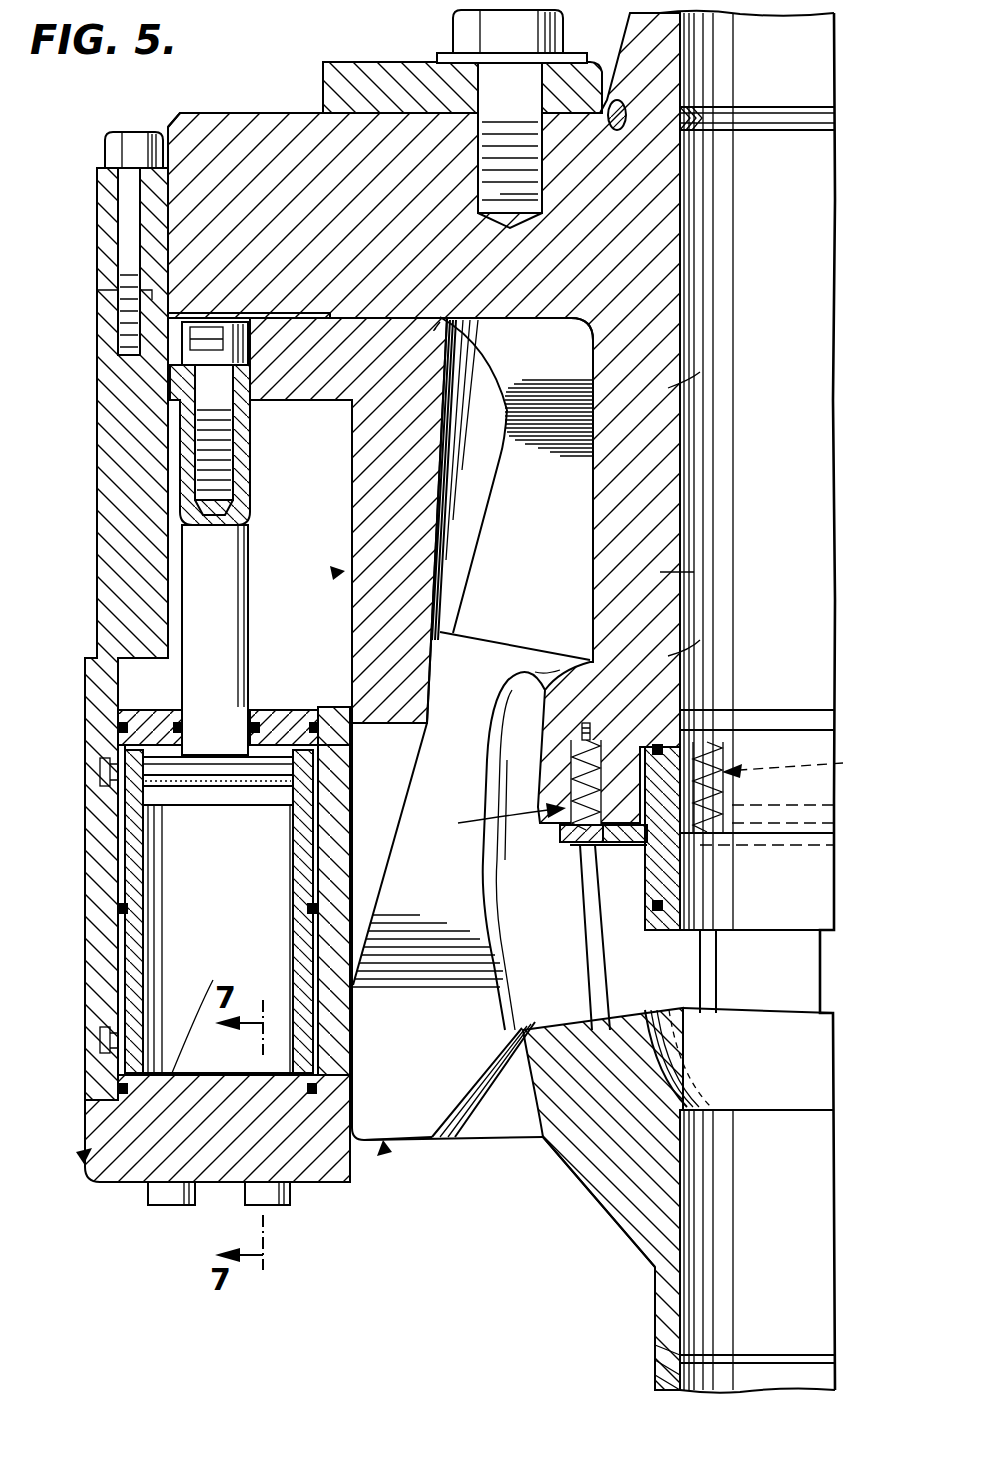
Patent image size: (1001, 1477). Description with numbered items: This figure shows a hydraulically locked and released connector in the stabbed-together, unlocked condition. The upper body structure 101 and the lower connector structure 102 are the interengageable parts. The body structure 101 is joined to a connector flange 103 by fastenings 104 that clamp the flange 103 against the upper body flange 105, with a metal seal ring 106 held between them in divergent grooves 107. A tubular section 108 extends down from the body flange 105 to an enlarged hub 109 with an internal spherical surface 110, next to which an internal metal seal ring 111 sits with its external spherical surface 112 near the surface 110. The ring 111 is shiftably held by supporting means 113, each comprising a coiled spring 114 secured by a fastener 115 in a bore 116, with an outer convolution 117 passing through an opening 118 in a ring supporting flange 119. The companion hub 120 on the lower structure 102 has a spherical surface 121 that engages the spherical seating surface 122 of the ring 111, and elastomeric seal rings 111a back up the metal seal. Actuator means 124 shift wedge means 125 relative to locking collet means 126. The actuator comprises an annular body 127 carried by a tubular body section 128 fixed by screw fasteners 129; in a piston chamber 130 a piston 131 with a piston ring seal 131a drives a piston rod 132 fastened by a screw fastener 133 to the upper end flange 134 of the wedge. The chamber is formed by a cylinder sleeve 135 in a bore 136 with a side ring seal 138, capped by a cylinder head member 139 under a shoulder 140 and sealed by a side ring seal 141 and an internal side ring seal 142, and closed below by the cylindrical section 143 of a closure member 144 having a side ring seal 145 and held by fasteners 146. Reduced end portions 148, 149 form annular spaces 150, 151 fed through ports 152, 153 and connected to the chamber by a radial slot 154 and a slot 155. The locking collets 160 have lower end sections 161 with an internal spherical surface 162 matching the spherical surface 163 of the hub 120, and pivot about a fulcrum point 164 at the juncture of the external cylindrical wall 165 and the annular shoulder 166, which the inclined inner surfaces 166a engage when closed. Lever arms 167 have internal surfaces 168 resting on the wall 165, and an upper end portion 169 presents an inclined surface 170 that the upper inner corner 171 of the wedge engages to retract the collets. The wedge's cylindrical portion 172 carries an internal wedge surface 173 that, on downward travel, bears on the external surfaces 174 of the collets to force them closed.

The upper body structure 101 is at (424, 418).
The lower connector structure 102 is at (659, 1281).
The connector flange 103 is at (386, 70).
The fastenings 104 is at (481, 156).
The upper body flange 105 is at (247, 112).
The metal seal ring 106 is at (682, 100).
The divergent grooves 107 is at (612, 100).
The tubular section 108 is at (668, 476).
The hub 109 is at (700, 692).
The spherical surface 110 is at (714, 716).
The internal metal seal ring 111 is at (706, 801).
The elastomeric seal rings 111a is at (664, 750).
The external spherical surface 112 is at (656, 762).
The supporting means 113 is at (651, 793).
The coiled spring 114 is at (578, 828).
The fastener 115 is at (583, 734).
The bore 116 is at (573, 770).
The outer convolution 117 is at (564, 845).
The opening 118 is at (606, 846).
The ring supporting flange 119 is at (576, 832).
The companion hub 120 is at (612, 1130).
The spherical surface 121 is at (681, 1070).
The spherical seating surface 122 is at (701, 966).
The actuator means 124 is at (82, 1156).
The wedge means 125 is at (335, 573).
The locking collet means 126 is at (384, 1150).
The annular body 127 is at (98, 881).
The tubular body section 128 is at (126, 433).
The screw fasteners 129 is at (126, 216).
The piston chamber 130 is at (218, 939).
The piston 131 is at (190, 800).
The piston ring seal 131a is at (233, 779).
The piston rod 132 is at (235, 546).
The screw fastener 133 is at (233, 429).
The upper end flange 134 is at (259, 346).
The cylinder sleeve 135 is at (126, 856).
The bore 136 is at (124, 801).
The side ring seal 138 is at (118, 910).
The cylinder head member 139 is at (136, 710).
The shoulder 140 is at (258, 735).
The side ring seal 141 is at (120, 728).
The internal side ring seal 142 is at (246, 735).
The cylindrical section 143 is at (243, 1086).
The closure member 144 is at (340, 1180).
The side ring seal 145 is at (118, 1089).
The fasteners 146 is at (166, 1206).
The reduced end portion 148 is at (330, 752).
The reduced end portion 149 is at (353, 1069).
The annular space 150 is at (346, 800).
The annular space 151 is at (353, 1031).
The port 152 is at (100, 769).
The port 153 is at (100, 1036).
The radial slot 154 is at (165, 757).
The slot 155 is at (210, 1015).
The locking collets 160 is at (446, 1140).
The lower end sections 161 is at (447, 931).
The internal spherical surface 162 is at (488, 926).
The spherical surface 163 is at (593, 1190).
The fulcrum point 164 is at (668, 657).
The external cylindrical wall 165 is at (660, 572).
The annular shoulder 166 is at (564, 656).
The inclined inner surfaces 166a is at (541, 675).
The lever arms 167 is at (549, 407).
The internal surfaces 168 is at (672, 388).
The upper end portion 169 is at (478, 330).
The inclined surface 170 is at (473, 362).
The upper inner corner 171 is at (436, 320).
The cylindrical portion 172 is at (366, 492).
The internal wedge surface 173 is at (452, 428).
The external surfaces 174 is at (472, 579).